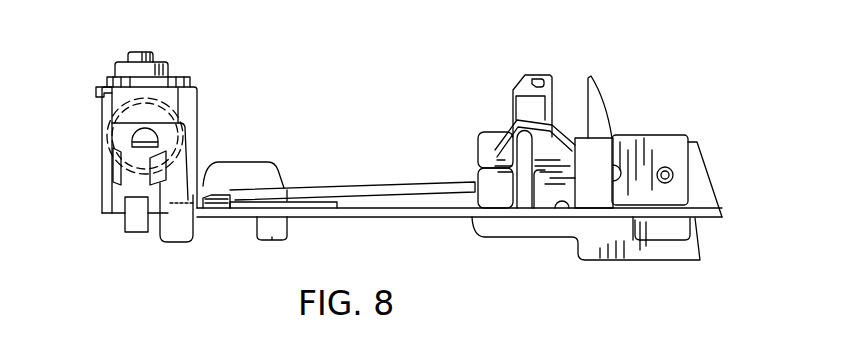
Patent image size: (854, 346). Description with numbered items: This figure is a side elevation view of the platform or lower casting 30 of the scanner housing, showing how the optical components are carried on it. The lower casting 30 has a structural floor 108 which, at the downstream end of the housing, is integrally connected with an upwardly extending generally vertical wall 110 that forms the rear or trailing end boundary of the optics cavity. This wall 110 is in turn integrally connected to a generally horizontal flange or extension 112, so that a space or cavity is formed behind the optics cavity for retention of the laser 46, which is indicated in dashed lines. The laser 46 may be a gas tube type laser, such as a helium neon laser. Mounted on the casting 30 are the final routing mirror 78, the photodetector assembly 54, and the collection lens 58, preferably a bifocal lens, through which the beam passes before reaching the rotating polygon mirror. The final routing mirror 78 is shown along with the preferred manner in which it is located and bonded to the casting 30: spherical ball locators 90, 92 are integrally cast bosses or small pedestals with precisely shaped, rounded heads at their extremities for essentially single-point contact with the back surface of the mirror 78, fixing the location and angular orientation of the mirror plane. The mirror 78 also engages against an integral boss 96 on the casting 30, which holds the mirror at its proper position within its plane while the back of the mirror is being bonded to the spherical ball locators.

The lower casting 30 is at (733, 125).
The laser 46 is at (95, 97).
The photodetector assembly 54 is at (555, 80).
The collection lens 58 is at (593, 103).
The final routing mirror 78 is at (413, 181).
The spherical ball locator 90 is at (260, 195).
The spherical ball locator 92 is at (450, 206).
The integral boss 96 is at (217, 209).
The structural floor 108 is at (371, 218).
The vertical wall 110 is at (198, 108).
The horizontal flange 112 is at (191, 86).